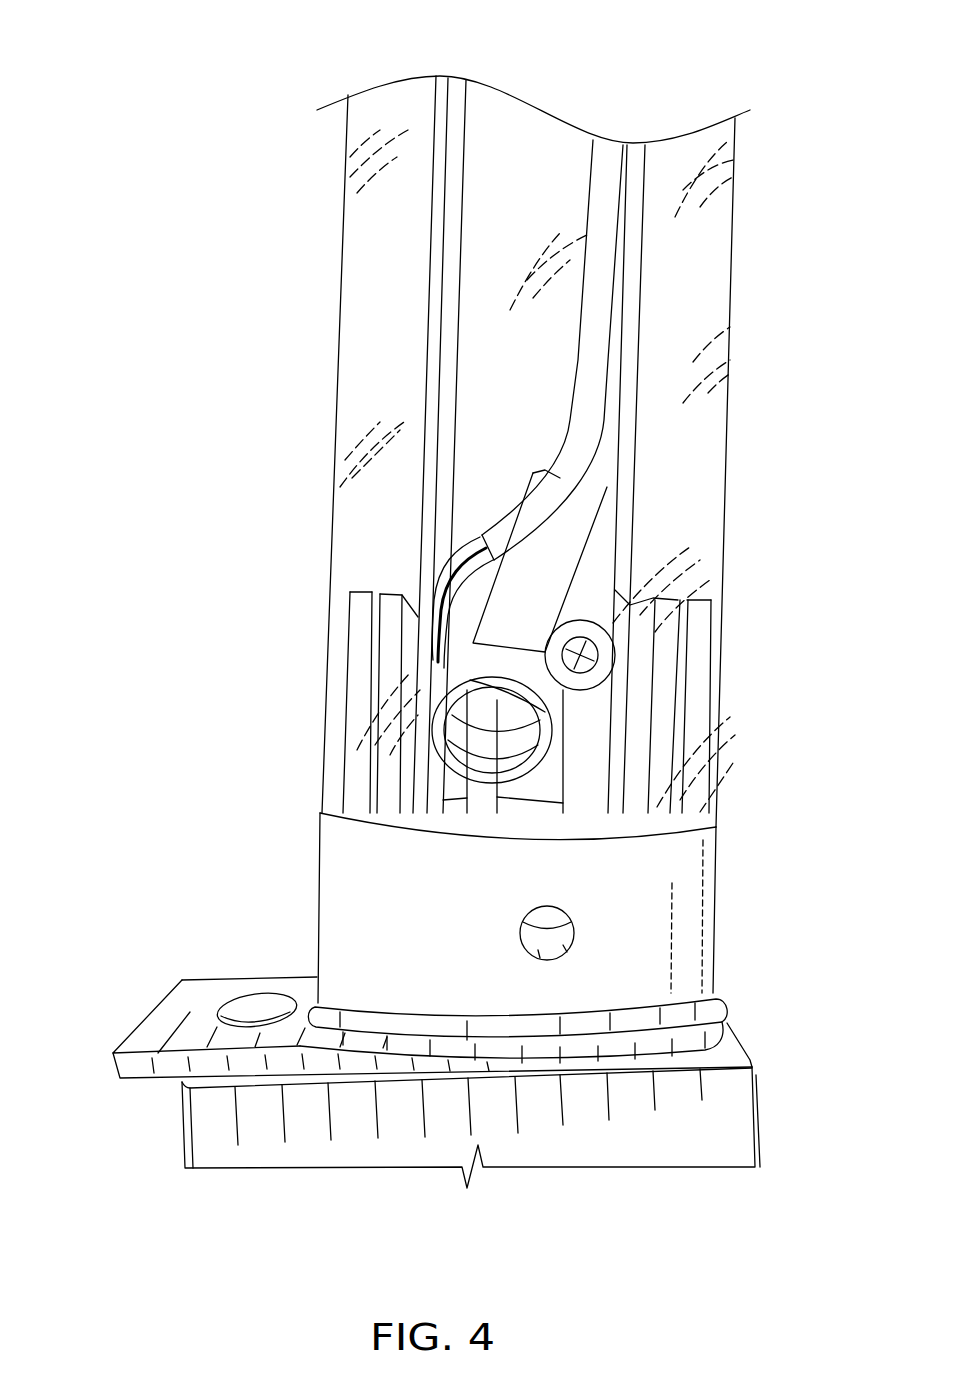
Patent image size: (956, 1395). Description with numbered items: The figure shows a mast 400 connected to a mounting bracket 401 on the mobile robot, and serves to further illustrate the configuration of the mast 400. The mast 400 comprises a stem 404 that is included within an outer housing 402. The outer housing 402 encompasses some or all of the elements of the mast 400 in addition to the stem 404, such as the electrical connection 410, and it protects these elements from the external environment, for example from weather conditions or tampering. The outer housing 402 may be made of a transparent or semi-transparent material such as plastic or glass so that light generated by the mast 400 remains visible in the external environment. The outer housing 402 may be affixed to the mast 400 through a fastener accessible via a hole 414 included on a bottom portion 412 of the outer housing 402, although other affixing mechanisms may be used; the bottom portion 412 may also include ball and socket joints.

The mast 400 is at (260, 38).
The mounting bracket 401 is at (163, 959).
The outer housing 402 is at (362, 272).
The stem 404 is at (438, 370).
The electrical connection 410 is at (562, 725).
The bottom portion 412 is at (680, 900).
The hole 414 is at (576, 949).